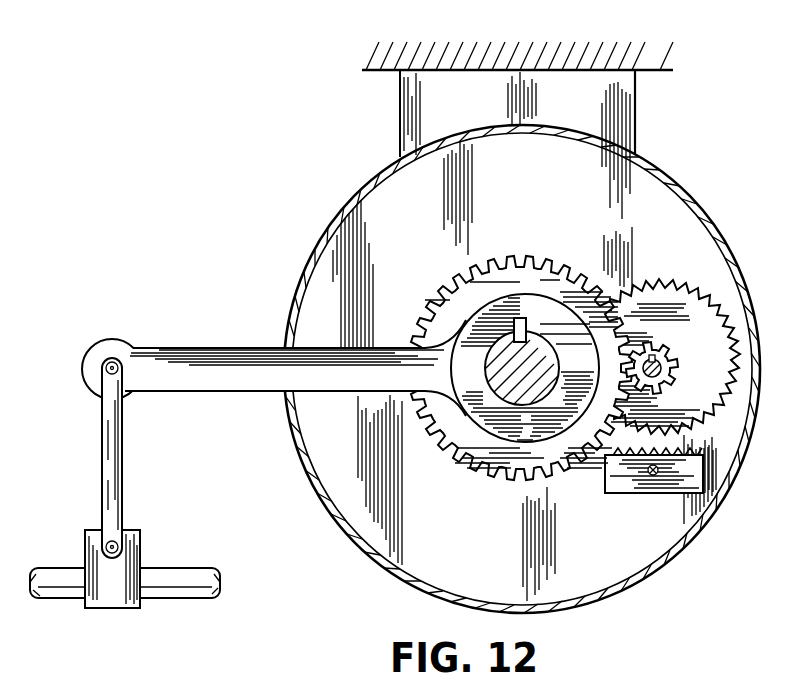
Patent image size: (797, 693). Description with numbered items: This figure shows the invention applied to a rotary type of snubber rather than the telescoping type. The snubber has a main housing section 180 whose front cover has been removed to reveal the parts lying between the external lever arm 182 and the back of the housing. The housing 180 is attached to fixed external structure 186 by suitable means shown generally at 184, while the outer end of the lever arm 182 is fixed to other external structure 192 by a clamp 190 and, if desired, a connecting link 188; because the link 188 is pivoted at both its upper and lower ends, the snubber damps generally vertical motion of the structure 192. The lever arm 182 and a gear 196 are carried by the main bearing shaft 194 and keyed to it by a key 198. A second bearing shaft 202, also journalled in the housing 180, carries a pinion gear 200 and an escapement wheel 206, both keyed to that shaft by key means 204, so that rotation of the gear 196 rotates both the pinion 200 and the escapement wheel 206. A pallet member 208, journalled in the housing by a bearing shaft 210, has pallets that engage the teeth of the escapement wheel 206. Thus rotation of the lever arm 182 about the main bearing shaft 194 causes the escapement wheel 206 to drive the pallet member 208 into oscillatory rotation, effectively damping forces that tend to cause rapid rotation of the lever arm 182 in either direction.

The main housing section 180 is at (735, 250).
The external lever arm 182 is at (200, 349).
The attachment means 184 is at (636, 118).
The fixed external structure 186 is at (585, 55).
The connecting link 188 is at (122, 445).
The clamp 190 is at (87, 556).
The external structure 192 is at (165, 570).
The main bearing shaft 194 is at (500, 369).
The gear 196 is at (548, 258).
The key 198 is at (515, 320).
The pinion gear 200 is at (658, 346).
The second bearing shaft 202 is at (657, 382).
The key means 204 is at (673, 357).
The escapement wheel 206 is at (663, 252).
The pallet member 208 is at (617, 490).
The bearing shaft 210 is at (655, 493).